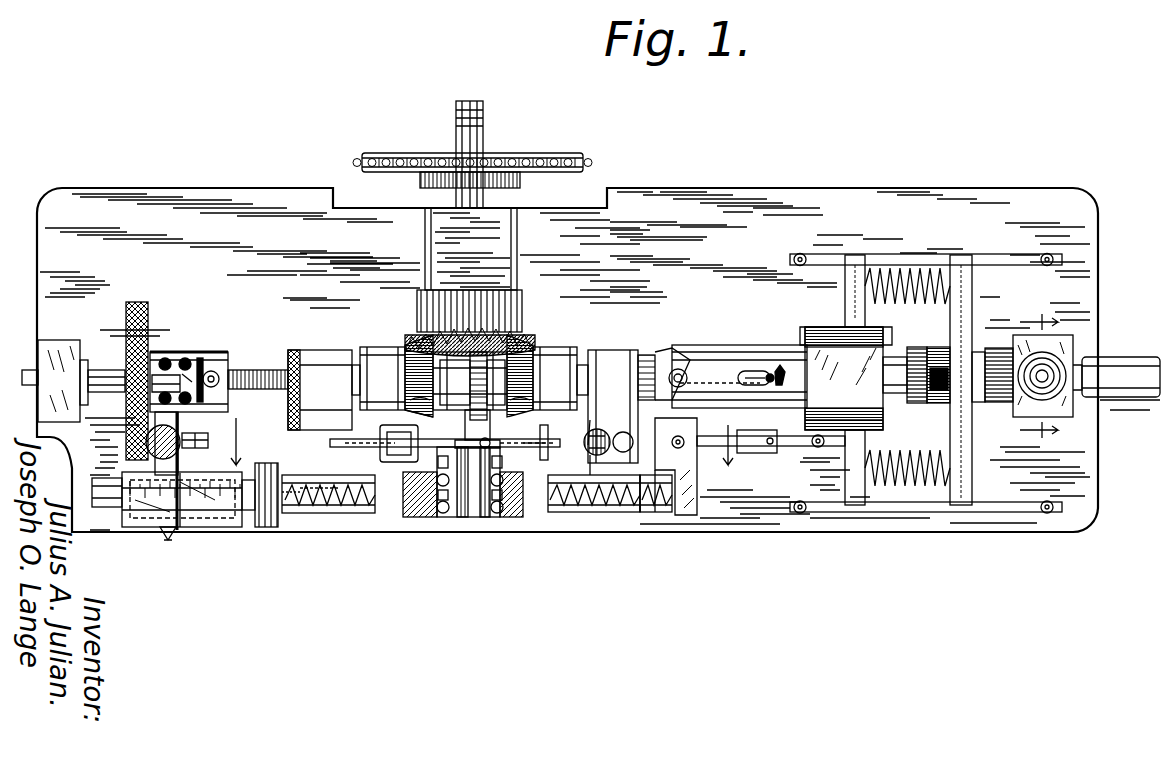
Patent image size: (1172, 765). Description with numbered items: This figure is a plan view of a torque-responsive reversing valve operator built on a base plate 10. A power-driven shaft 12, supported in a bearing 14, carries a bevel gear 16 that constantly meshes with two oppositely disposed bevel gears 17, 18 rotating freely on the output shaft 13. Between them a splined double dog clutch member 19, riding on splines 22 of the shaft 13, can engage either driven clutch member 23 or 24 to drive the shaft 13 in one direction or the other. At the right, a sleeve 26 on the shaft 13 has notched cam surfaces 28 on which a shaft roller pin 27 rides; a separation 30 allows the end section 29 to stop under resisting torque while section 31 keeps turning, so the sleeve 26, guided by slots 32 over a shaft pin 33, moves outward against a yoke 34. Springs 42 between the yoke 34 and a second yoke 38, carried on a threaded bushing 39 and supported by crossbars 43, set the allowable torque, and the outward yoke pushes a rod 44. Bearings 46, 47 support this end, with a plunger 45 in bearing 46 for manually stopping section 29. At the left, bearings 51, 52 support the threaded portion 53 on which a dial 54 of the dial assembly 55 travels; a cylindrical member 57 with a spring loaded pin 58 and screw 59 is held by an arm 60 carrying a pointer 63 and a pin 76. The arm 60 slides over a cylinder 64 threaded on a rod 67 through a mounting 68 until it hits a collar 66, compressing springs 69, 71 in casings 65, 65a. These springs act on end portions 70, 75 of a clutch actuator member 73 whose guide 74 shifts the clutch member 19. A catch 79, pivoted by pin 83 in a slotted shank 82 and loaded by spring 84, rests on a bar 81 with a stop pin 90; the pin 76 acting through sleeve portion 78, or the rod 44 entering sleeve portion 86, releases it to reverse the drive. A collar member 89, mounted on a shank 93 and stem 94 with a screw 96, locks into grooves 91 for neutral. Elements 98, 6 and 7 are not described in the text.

The base plate 10 is at (122, 188).
The shaft 12 is at (462, 101).
The shaft 13 is at (1120, 352).
The bearing 14 is at (517, 242).
The bevel gear 16 is at (522, 300).
The bevel gear 17 is at (552, 347).
The bevel gear 18 is at (385, 347).
The double dog clutch member 19 is at (466, 355).
The splines 22 is at (388, 153).
The driven clutch member 23 is at (533, 372).
The driven clutch member 24 is at (405, 372).
The sleeve 26 is at (700, 345).
The shaft roller pin 27 is at (678, 368).
The cam surfaces 28 is at (662, 362).
The shaft end section 29 is at (770, 372).
The separation 30 is at (748, 371).
The shaft section 31 is at (745, 378).
The longitudinal slots 32 is at (720, 395).
The shaft pin 33 is at (782, 365).
The yoke 34 is at (846, 378).
The yoke 38 is at (965, 290).
The threaded bushing 39 is at (996, 405).
The springs 42 is at (890, 268).
The crossbars 43 is at (812, 254).
The rod 44 is at (720, 446).
The spring loaded plunger 45 is at (1060, 400).
The bearing 46 is at (1075, 340).
The bearing 47 is at (600, 350).
The bearing 51 is at (308, 350).
The bearing 52 is at (46, 340).
The threaded portion 53 is at (252, 370).
The dial 54 is at (134, 302).
The dial assembly 55 is at (156, 350).
The cylindrical member 57 is at (186, 360).
The spring loaded pin 58 is at (202, 355).
The screw 59 is at (216, 372).
The arm 60 is at (150, 445).
The pointer 63 is at (170, 540).
The cylinder 64 is at (106, 507).
The casing 65 is at (586, 512).
The casing 65a is at (325, 513).
The collar 66 is at (200, 527).
The rod 67 is at (266, 527).
The mounting 68 is at (196, 527).
The spring 69 is at (640, 512).
The end portion 70 is at (686, 515).
The spring 71 is at (292, 510).
The clutch actuator member 73 is at (372, 462).
The guide 74 is at (468, 418).
The end portion 75 is at (252, 510).
The pin 76 is at (196, 455).
The sleeve portion 78 is at (358, 513).
The catch 79 is at (530, 398).
The bar 81 is at (466, 517).
The slotted shank 82 is at (385, 430).
The pin 83 is at (410, 398).
The spring 84 is at (532, 450).
The sleeve portion 86 is at (662, 512).
The collar member 89 is at (556, 460).
The stop pin 90 is at (762, 453).
The transverse grooves 91 is at (613, 406).
The shank 93 is at (626, 432).
The stem 94 is at (590, 420).
The screw 96 is at (592, 512).
The roller 98 is at (600, 430).
The direction arrow 6 is at (1039, 378).
The direction arrow 7 is at (480, 432).